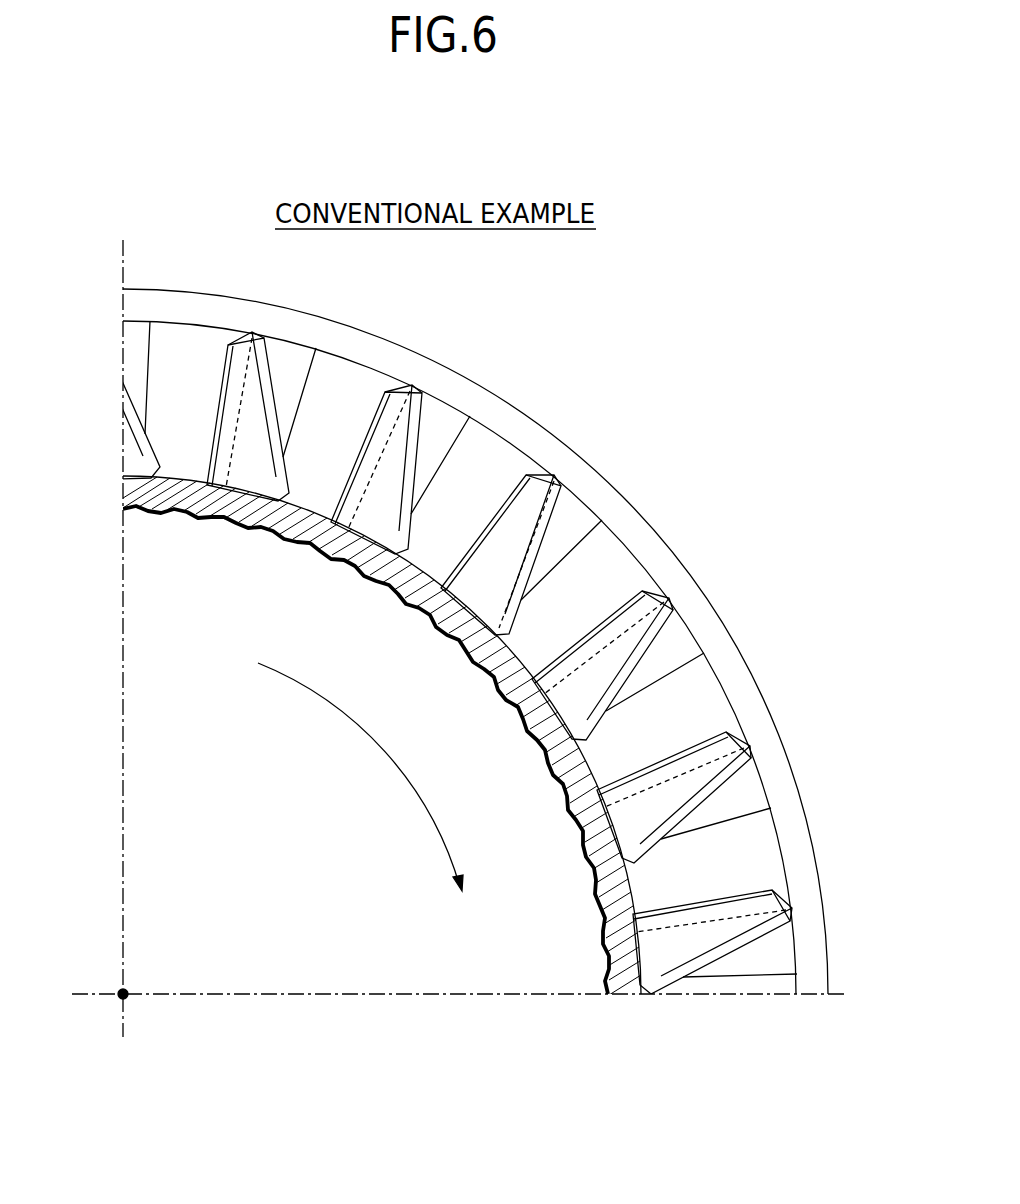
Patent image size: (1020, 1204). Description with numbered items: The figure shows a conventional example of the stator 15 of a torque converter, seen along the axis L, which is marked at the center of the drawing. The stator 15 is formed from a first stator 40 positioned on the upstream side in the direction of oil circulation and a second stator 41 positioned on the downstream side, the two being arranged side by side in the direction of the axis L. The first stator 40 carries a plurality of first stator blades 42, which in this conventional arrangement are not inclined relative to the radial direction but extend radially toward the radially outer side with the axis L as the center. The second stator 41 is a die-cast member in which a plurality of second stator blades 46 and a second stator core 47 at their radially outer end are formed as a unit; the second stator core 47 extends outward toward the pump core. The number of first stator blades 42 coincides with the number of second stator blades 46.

The stator 15 is at (450, 661).
The first stator 40 is at (428, 639).
The second stator 41 is at (556, 431).
The first stator blade 42 is at (244, 480).
The second stator blade 46 is at (292, 378).
The second stator core 47 is at (738, 673).
The axis L is at (119, 999).